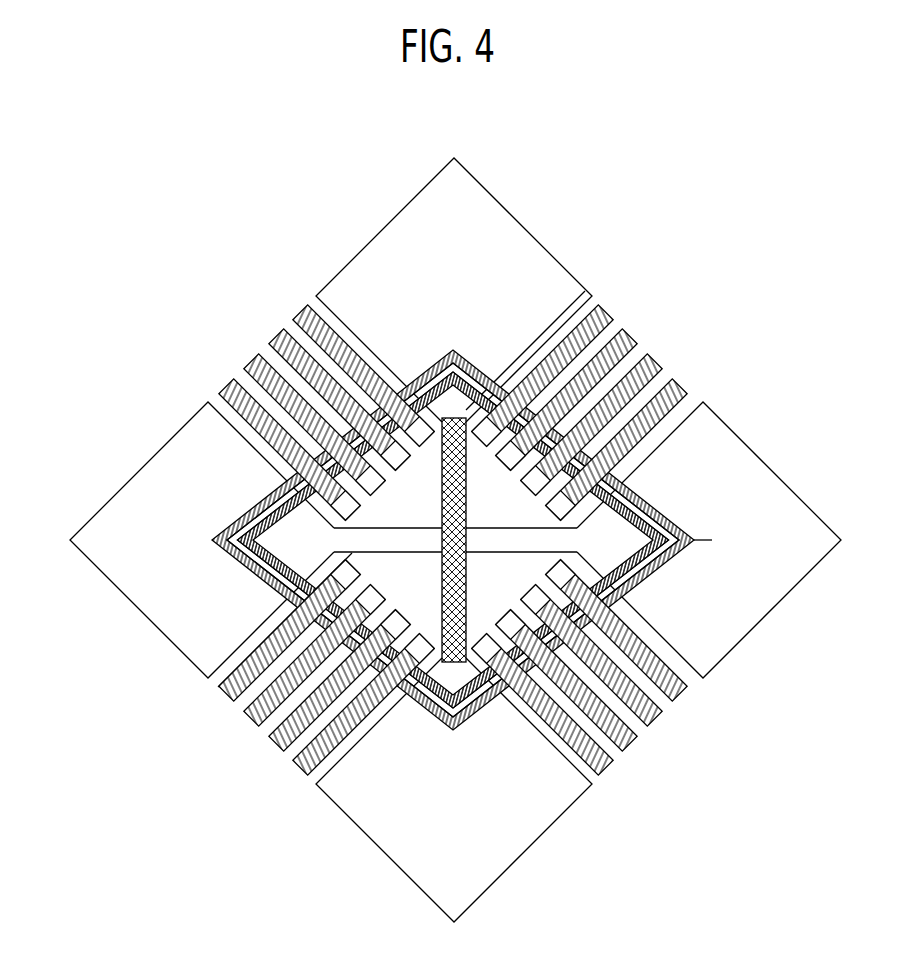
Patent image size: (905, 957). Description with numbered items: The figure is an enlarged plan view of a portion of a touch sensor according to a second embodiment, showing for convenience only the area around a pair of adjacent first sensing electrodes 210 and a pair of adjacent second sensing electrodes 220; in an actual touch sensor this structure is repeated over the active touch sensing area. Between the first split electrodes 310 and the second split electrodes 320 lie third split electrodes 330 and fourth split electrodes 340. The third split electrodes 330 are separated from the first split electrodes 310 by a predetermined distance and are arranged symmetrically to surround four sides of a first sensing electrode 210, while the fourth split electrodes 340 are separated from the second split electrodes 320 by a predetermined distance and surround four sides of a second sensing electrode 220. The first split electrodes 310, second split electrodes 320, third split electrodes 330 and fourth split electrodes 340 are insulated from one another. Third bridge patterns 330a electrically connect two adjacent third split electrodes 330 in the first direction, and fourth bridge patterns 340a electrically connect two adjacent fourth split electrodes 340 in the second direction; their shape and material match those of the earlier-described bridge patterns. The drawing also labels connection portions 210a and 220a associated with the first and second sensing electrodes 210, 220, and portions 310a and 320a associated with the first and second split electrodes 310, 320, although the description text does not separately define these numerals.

The first sensing electrode 210 is at (135, 475).
The second sensing electrode 220 is at (385, 227).
The first electrode connection portion 210a is at (220, 686).
The second electrode connection portion 220a is at (584, 292).
The first split electrode 310 is at (232, 383).
The second split electrode 320 is at (300, 310).
The third split electrode 330 is at (250, 357).
The fourth split electrode 340 is at (277, 333).
The first bridge connection portion 310a is at (461, 424).
The second bridge connection portion 320a is at (212, 540).
The third bridge pattern 330a is at (456, 376).
The fourth bridge pattern 340a is at (255, 559).